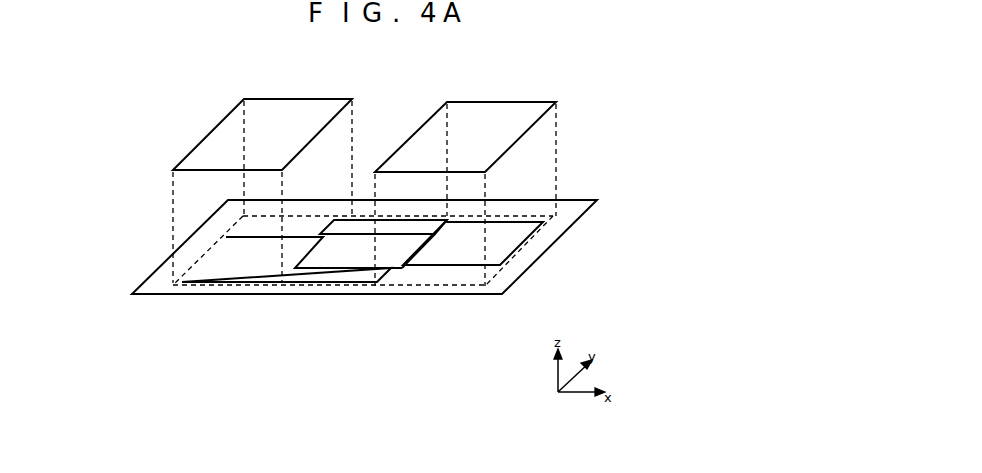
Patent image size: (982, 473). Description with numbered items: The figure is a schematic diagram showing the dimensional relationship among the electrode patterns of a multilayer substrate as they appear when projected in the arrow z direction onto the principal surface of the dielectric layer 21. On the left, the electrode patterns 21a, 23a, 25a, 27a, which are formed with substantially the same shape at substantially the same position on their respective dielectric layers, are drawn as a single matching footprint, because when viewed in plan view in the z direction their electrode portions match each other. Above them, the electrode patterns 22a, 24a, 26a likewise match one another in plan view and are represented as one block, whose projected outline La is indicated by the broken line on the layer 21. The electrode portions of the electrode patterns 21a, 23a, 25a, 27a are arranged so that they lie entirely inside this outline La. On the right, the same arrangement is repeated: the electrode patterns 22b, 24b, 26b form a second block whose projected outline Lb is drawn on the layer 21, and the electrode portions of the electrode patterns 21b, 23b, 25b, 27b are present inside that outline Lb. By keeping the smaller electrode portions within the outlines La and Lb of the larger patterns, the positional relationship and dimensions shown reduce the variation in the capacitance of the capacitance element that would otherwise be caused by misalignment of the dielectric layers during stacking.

The dielectric layer 21 is at (585, 213).
The electrode pattern 21a is at (206, 256).
The electrode pattern 23a is at (292, 259).
The electrode pattern 25a is at (292, 259).
The electrode pattern 27a is at (292, 259).
The electrode pattern 21b is at (522, 244).
The electrode pattern 23b is at (431, 244).
The electrode pattern 25b is at (431, 244).
The electrode pattern 27b is at (431, 244).
The electrode pattern 22a is at (207, 133).
The electrode pattern 24a is at (262, 134).
The electrode pattern 26a is at (262, 134).
The electrode pattern 22b is at (543, 115).
The electrode pattern 24b is at (465, 137).
The electrode pattern 26b is at (465, 137).
The outline La is at (220, 295).
The outline Lb is at (420, 298).